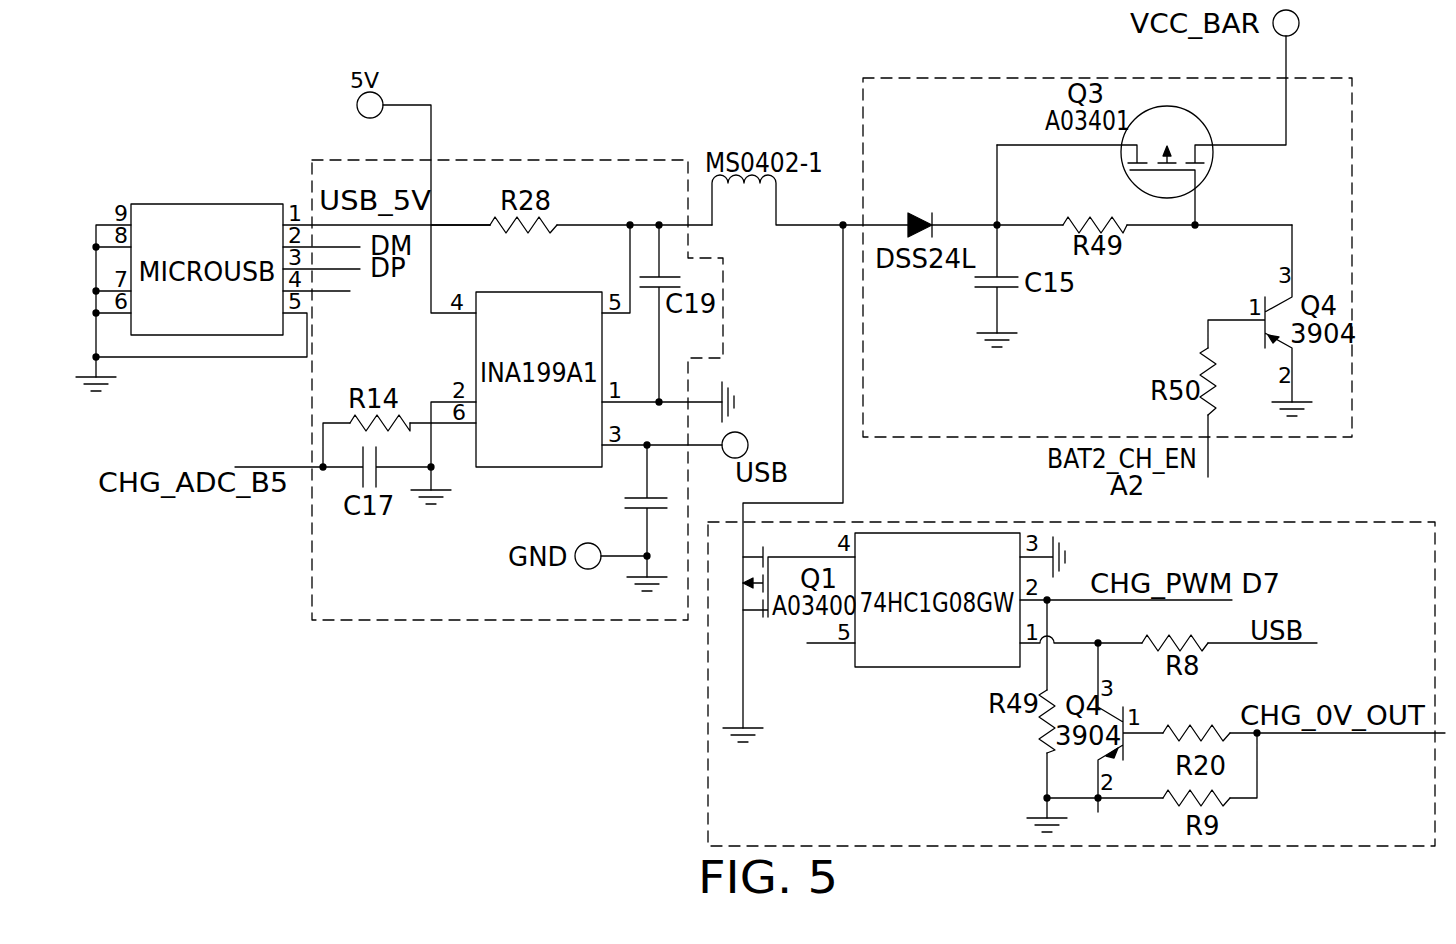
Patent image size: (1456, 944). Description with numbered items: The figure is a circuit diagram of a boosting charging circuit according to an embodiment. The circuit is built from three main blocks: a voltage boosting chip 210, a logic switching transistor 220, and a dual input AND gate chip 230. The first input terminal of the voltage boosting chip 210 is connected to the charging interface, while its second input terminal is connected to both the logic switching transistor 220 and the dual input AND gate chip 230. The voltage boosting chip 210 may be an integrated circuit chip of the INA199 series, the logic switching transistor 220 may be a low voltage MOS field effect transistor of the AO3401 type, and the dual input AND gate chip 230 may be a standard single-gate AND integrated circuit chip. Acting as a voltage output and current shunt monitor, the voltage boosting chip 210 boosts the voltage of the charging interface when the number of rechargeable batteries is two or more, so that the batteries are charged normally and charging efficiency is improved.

The voltage boosting chip 210 is at (555, 160).
The logic switching transistor 220 is at (863, 100).
The dual input AND gate chip 230 is at (708, 765).